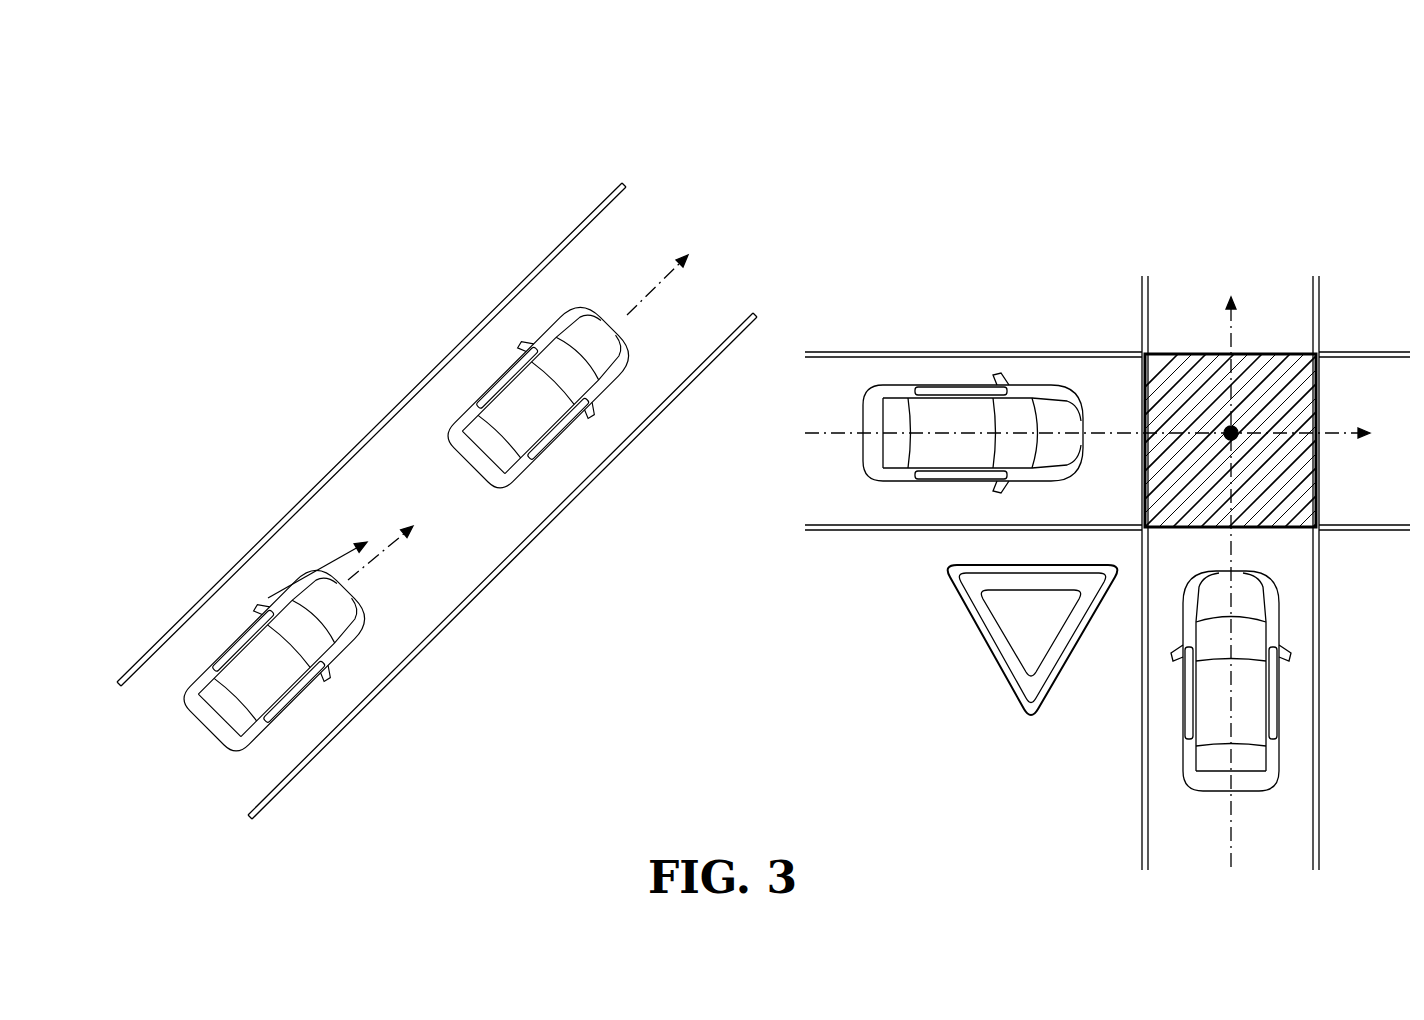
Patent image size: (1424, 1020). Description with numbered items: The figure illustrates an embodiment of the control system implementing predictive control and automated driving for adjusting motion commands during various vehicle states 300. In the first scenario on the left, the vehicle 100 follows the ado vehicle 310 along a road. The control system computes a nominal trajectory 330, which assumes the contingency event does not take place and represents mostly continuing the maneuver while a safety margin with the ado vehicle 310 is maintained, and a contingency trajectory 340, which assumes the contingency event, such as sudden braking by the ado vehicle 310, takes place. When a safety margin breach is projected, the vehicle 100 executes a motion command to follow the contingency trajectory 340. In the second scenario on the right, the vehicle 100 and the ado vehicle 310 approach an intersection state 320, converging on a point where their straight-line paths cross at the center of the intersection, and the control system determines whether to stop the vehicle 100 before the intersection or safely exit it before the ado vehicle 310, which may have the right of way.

The vehicle 100 is at (257, 668).
The vehicle states 300 is at (1048, 103).
The ado vehicle 310 is at (510, 400).
The intersection state 320 is at (1262, 352).
The nominal trajectory 330 is at (390, 552).
The contingency trajectory 340 is at (352, 553).